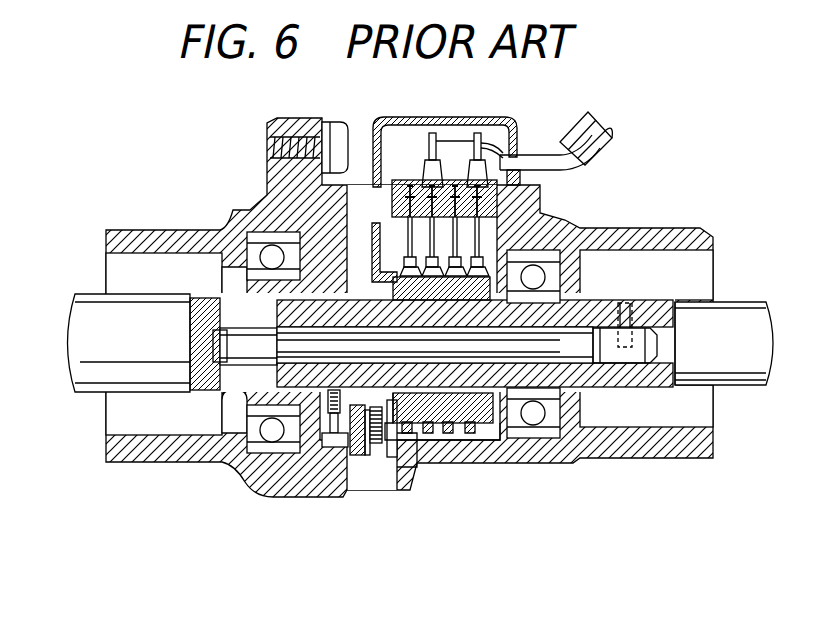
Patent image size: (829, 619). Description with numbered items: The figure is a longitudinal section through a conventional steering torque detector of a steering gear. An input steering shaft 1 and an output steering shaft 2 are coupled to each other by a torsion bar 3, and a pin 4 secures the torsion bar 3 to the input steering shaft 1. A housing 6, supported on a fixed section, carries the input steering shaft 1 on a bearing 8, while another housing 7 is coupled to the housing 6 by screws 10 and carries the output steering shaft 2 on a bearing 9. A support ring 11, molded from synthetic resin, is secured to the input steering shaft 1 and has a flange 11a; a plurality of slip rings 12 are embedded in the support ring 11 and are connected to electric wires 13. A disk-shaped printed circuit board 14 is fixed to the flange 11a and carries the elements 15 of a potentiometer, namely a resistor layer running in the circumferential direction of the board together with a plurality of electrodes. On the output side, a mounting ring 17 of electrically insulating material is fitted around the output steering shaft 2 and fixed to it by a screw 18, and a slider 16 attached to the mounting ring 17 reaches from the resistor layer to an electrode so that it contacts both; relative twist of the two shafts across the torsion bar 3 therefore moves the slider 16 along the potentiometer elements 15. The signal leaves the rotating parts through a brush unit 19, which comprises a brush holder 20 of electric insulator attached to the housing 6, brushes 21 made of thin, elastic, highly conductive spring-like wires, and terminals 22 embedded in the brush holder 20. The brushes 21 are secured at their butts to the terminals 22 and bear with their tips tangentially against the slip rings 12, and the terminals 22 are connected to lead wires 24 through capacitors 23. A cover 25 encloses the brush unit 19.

The input steering shaft 1 is at (747, 310).
The output steering shaft 2 is at (86, 312).
The torsion bar 3 is at (570, 342).
The pin 4 is at (623, 307).
The housing 6 is at (703, 243).
The housing 7 is at (184, 232).
The bearing 8 is at (543, 433).
The bearing 9 is at (263, 450).
The screws 10 is at (338, 128).
The support ring 11 is at (495, 428).
The flange 11a is at (400, 453).
The slip rings 12 is at (453, 433).
The electric wires 13 is at (400, 275).
The printed circuit board 14 is at (388, 460).
The potentiometer elements 15 is at (376, 445).
The slider 16 is at (368, 455).
The mounting ring 17 is at (358, 458).
The screw 18 is at (330, 447).
The brush unit 19 is at (529, 231).
The brush holder 20 is at (477, 235).
The brushes 21 is at (497, 213).
The terminals 22 is at (497, 203).
The capacitors 23 is at (440, 180).
The lead wires 24 is at (540, 160).
The cover 25 is at (418, 117).